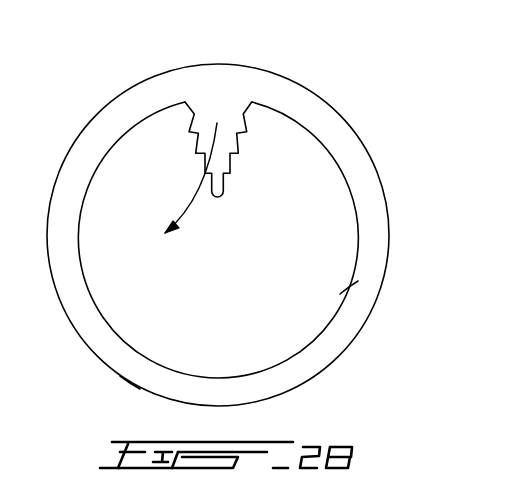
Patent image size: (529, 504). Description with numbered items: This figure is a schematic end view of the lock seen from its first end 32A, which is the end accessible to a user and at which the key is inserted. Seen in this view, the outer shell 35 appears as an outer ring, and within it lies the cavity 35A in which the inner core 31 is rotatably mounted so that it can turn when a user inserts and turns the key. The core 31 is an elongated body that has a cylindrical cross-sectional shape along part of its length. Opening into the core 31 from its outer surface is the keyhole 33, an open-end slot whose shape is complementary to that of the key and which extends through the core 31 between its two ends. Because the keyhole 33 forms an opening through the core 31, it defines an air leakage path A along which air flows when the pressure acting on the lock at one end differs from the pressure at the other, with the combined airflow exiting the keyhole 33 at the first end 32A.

The first end 32A is at (347, 138).
The inner core 31 is at (328, 323).
The keyhole 33 is at (225, 143).
The air leakage path A is at (200, 197).
The cavity 35A is at (353, 272).
The outer shell 35 is at (130, 383).